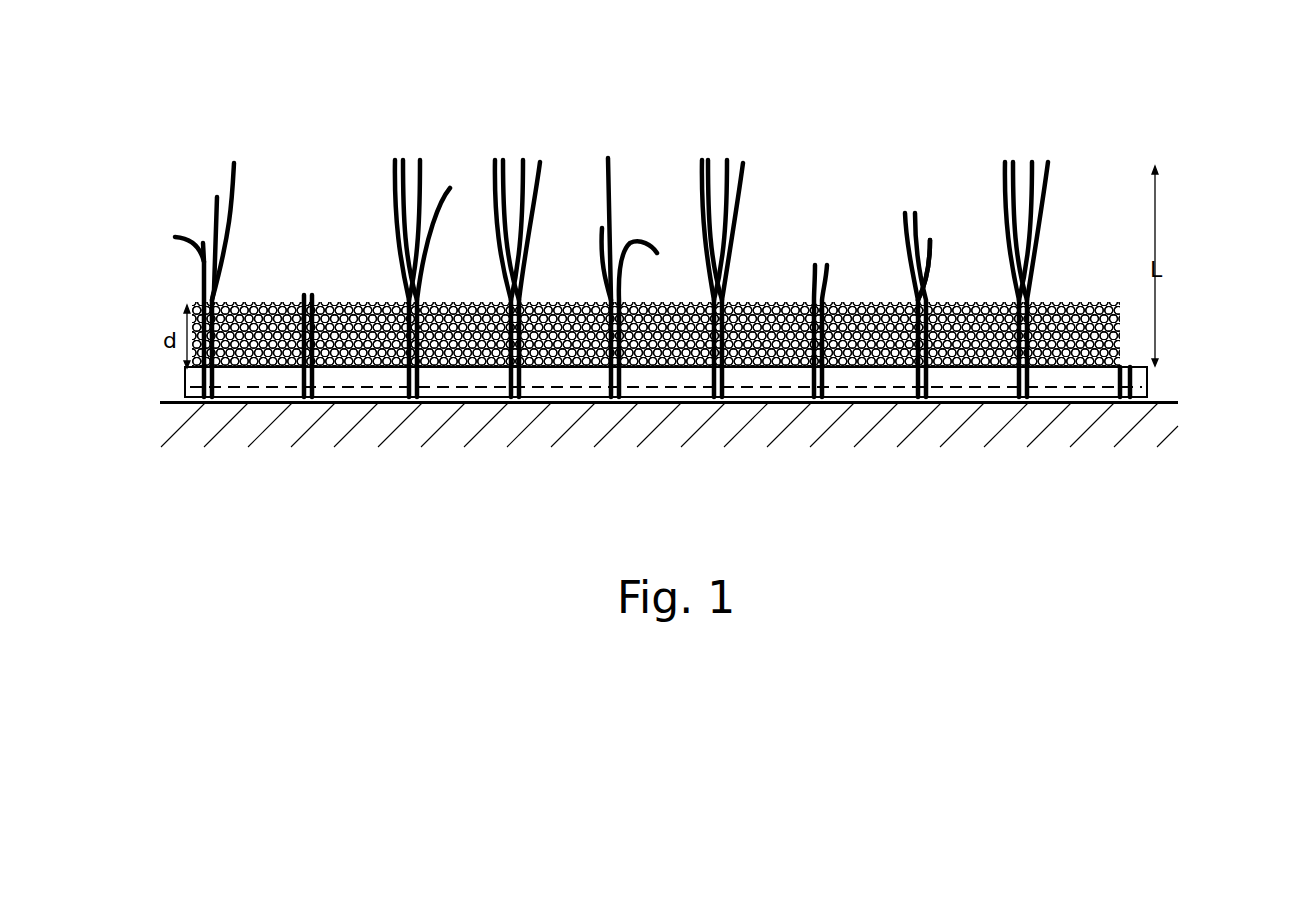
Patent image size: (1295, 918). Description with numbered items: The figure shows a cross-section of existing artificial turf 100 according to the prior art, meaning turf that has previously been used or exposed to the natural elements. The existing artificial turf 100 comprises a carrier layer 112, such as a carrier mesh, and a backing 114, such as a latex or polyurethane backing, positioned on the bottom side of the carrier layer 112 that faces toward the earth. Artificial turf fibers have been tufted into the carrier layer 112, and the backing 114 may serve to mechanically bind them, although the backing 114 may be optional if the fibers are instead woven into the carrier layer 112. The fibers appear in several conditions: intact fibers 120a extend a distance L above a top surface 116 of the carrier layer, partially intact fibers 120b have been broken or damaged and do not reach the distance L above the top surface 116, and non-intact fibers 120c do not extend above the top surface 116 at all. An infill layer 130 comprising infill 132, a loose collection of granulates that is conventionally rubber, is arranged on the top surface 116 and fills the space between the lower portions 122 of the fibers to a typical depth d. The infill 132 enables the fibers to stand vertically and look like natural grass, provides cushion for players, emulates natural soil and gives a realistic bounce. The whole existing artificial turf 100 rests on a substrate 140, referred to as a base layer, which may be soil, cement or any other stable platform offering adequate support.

The existing artificial turf 100 is at (703, 340).
The carrier layer 112 is at (460, 383).
The backing 114 is at (640, 404).
The top surface 116 is at (1143, 365).
The intact fibers 120a is at (236, 166).
The partially intact fibers 120b is at (222, 152).
The non-intact fibers 120c is at (1115, 372).
The lower portions 122 is at (941, 292).
The infill layer 130 is at (1090, 298).
The infill 132 is at (356, 369).
The substrate 140 is at (1170, 428).